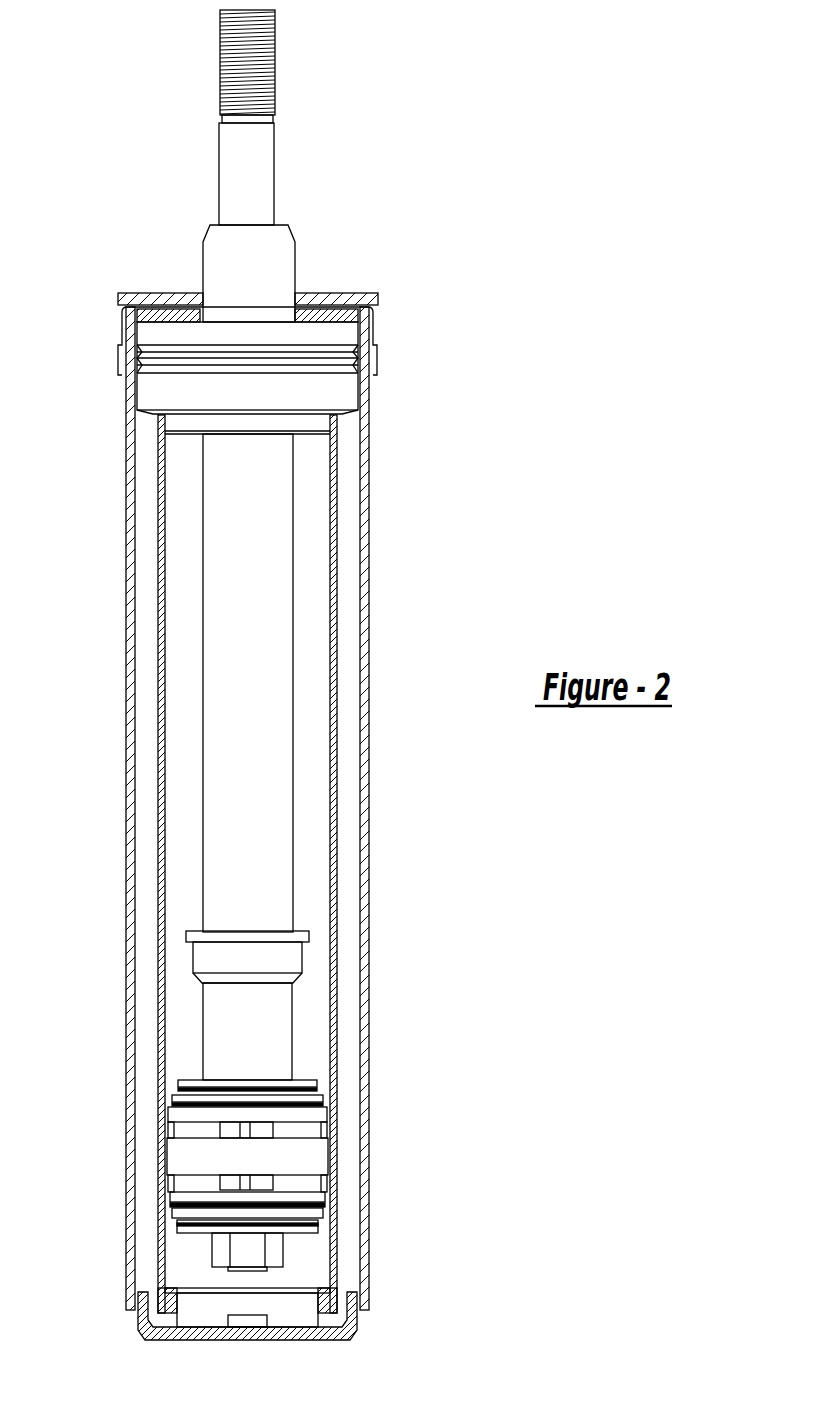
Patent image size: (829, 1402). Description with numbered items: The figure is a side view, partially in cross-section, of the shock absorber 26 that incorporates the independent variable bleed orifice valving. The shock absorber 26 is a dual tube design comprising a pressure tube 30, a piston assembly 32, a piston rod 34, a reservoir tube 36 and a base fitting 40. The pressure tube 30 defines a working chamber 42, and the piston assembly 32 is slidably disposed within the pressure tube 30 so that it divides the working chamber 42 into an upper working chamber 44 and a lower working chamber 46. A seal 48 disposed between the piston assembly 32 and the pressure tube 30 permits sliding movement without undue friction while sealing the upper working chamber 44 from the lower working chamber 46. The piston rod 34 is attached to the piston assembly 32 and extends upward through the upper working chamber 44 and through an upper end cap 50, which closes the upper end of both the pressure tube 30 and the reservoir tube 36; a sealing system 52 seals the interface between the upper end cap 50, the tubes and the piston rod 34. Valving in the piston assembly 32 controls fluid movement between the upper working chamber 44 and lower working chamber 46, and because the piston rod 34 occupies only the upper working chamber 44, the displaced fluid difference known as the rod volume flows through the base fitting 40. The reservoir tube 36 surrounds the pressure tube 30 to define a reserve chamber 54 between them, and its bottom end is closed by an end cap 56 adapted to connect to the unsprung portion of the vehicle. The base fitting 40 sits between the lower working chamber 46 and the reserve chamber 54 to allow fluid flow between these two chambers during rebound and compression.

The shock absorber 26 is at (304, 675).
The pressure tube 30 is at (338, 500).
The piston assembly 32 is at (322, 1175).
The piston rod 34 is at (246, 697).
The reservoir tube 36 is at (367, 883).
The base fitting 40 is at (300, 1308).
The working chamber 42 is at (302, 1018).
The upper working chamber 44 is at (305, 592).
The lower working chamber 46 is at (305, 1260).
The seal 48 is at (226, 1166).
The upper end cap 50 is at (337, 378).
The sealing system 52 is at (118, 355).
The reserve chamber 54 is at (148, 792).
The end cap 56 is at (348, 1333).